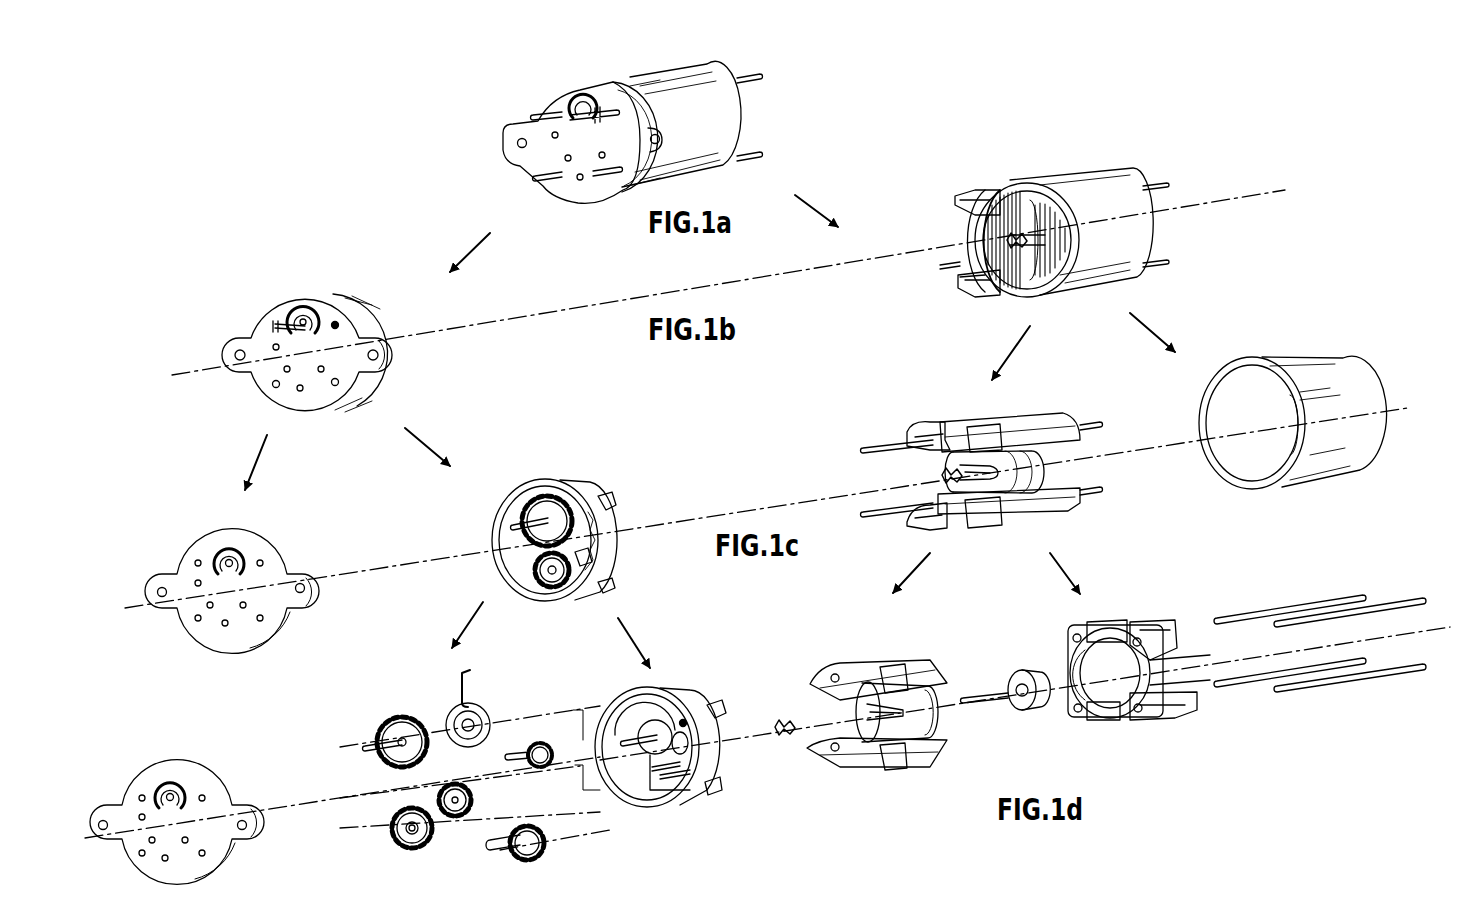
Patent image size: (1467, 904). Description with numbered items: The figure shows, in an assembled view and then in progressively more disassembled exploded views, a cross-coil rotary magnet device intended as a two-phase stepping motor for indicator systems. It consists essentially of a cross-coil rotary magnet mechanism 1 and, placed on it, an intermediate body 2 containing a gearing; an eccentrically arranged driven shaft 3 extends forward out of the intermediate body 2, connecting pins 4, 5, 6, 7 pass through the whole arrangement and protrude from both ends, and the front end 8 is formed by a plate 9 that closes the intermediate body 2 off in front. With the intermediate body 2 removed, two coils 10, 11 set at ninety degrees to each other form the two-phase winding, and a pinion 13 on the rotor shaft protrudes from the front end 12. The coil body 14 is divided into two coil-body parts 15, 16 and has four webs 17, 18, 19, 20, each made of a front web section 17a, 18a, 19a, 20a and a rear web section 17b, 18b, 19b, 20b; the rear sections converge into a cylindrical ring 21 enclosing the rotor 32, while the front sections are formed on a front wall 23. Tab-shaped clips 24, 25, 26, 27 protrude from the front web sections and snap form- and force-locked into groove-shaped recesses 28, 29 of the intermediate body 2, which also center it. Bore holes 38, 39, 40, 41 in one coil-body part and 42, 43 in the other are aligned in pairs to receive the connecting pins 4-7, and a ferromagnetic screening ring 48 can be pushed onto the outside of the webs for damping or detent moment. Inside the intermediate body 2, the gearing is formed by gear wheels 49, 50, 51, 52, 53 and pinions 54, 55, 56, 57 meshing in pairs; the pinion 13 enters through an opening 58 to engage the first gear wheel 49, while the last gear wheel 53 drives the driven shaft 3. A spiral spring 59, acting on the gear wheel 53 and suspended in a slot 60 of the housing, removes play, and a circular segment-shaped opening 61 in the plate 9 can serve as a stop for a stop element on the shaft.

In FIG. 1A, the cross-coil rotary magnet mechanism 1 is at (730, 122).
In FIG. 1B, the cross-coil rotary magnet mechanism 1 is at (1122, 185).
In FIG. 1A, the intermediate body 2 is at (608, 79).
In FIG. 1B, the intermediate body 2 is at (368, 308).
In FIG. 1C, the intermediate body 2 is at (565, 480).
In FIG. 1A, the driven shaft 3 is at (562, 114).
In FIG. 1B, the driven shaft 3 is at (276, 326).
In FIG. 1D, the driven shaft 3 is at (365, 748).
In FIG. 1A, the connecting pin 4 is at (533, 116).
In FIG. 1D, the connecting pin 4 is at (1270, 612).
In FIG. 1A, the connecting pin 5 is at (534, 183).
In FIG. 1D, the connecting pin 5 is at (1252, 682).
In FIG. 1A, the connecting pin 6 is at (761, 79).
In FIG. 1D, the connecting pin 6 is at (1412, 600).
In FIG. 1A, the connecting pin 7 is at (766, 150).
In FIG. 1D, the connecting pin 7 is at (1385, 680).
In FIG. 1A, the front end 8 is at (572, 198).
In FIG. 1A, the plate 9 is at (580, 94).
In FIG. 1C, the plate 9 is at (255, 548).
In FIG. 1D, the plate 9 is at (197, 782).
In FIG. 1B, the coil 10 is at (999, 185).
In FIG. 1B, the coil 11 is at (1076, 290).
In FIG. 1B, the front end 12 is at (1003, 297).
In FIG. 1B, the pinion 13 is at (975, 245).
In FIG. 1C, the pinion 13 is at (942, 475).
In FIG. 1D, the pinion 13 is at (783, 720).
In FIG. 1C, the coil body 14 is at (1025, 412).
In FIG. 1D, the coil-body part 15 is at (1172, 660).
In FIG. 1D, the coil-body part 16 is at (850, 700).
In FIG. 1C, the web 17 is at (940, 428).
In FIG. 1D, the front web section 17a is at (865, 665).
In FIG. 1D, the rear web section 17b is at (1110, 620).
In FIG. 1C, the web 18 is at (935, 522).
In FIG. 1D, the front web section 18a is at (875, 760).
In FIG. 1D, the rear web section 18b is at (1118, 722).
In FIG. 1C, the web 19 is at (1063, 412).
In FIG. 1D, the front web section 19a is at (935, 680).
In FIG. 1D, the rear web section 19b is at (1178, 632).
In FIG. 1C, the web 20 is at (1068, 506).
In FIG. 1D, the front web section 20a is at (935, 757).
In FIG. 1D, the rear web section 20b is at (1192, 708).
In FIG. 1D, the cylindrical ring 21 is at (1185, 690).
In FIG. 1D, the front wall 23 is at (935, 722).
In FIG. 1D, the tab-shaped clip 24 is at (822, 675).
In FIG. 1D, the tab-shaped clip 25 is at (925, 665).
In FIG. 1D, the tab-shaped clip 26 is at (895, 768).
In FIG. 1D, the tab-shaped clip 27 is at (815, 757).
In FIG. 1C, the recess 28 is at (614, 500).
In FIG. 1D, the recess 28 is at (718, 705).
In FIG. 1C, the recess 29 is at (618, 582).
In FIG. 1D, the recess 29 is at (713, 793).
In FIG. 1D, the rotor 32 is at (1025, 710).
In FIG. 1D, the bore hole 38 is at (850, 665).
In FIG. 1D, the bore hole 39 is at (858, 768).
In FIG. 1D, the bore hole 40 is at (1072, 636).
In FIG. 1D, the bore hole 41 is at (1140, 638).
In FIG. 1D, the bore hole 42 is at (1142, 712).
In FIG. 1D, the bore hole 43 is at (1078, 715).
In FIG. 1C, the screening ring 48 is at (1313, 372).
In FIG. 1C, the gear wheel 49 is at (580, 590).
In FIG. 1D, the gear wheel 49 is at (545, 743).
In FIG. 1D, the gear wheel 50 is at (542, 850).
In FIG. 1D, the gear wheel 51 is at (403, 848).
In FIG. 1D, the gear wheel 52 is at (438, 802).
In FIG. 1D, the gear wheel 53 is at (398, 717).
In FIG. 1D, the pinion 54 is at (520, 748).
In FIG. 1D, the pinion 55 is at (492, 850).
In FIG. 1D, the pinion 56 is at (438, 832).
In FIG. 1D, the pinion 57 is at (465, 790).
In FIG. 1D, the opening 58 is at (692, 742).
In FIG. 1D, the spiral spring 59 is at (470, 705).
In FIG. 1D, the slot 60 is at (660, 690).
In FIG. 1B, the circular segment-shaped opening 61 is at (303, 310).
In FIG. 1C, the circular segment-shaped opening 61 is at (220, 553).
In FIG. 1D, the circular segment-shaped opening 61 is at (165, 785).